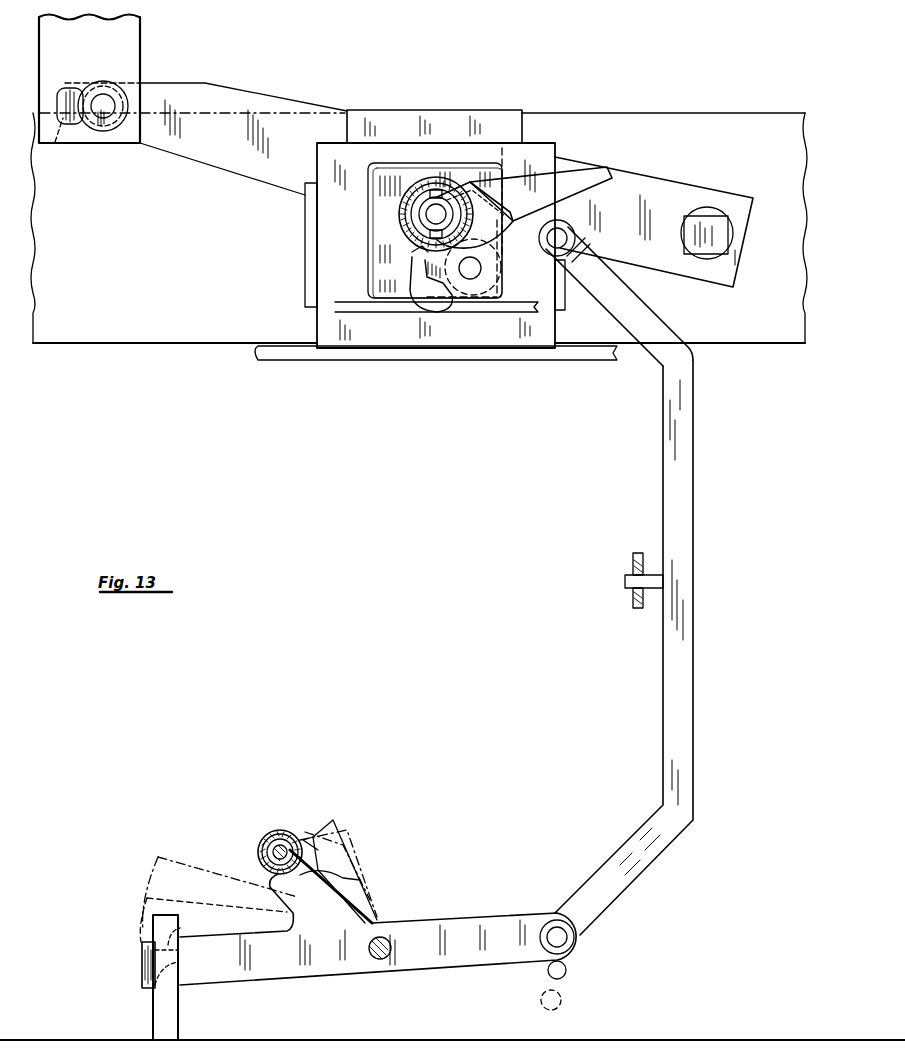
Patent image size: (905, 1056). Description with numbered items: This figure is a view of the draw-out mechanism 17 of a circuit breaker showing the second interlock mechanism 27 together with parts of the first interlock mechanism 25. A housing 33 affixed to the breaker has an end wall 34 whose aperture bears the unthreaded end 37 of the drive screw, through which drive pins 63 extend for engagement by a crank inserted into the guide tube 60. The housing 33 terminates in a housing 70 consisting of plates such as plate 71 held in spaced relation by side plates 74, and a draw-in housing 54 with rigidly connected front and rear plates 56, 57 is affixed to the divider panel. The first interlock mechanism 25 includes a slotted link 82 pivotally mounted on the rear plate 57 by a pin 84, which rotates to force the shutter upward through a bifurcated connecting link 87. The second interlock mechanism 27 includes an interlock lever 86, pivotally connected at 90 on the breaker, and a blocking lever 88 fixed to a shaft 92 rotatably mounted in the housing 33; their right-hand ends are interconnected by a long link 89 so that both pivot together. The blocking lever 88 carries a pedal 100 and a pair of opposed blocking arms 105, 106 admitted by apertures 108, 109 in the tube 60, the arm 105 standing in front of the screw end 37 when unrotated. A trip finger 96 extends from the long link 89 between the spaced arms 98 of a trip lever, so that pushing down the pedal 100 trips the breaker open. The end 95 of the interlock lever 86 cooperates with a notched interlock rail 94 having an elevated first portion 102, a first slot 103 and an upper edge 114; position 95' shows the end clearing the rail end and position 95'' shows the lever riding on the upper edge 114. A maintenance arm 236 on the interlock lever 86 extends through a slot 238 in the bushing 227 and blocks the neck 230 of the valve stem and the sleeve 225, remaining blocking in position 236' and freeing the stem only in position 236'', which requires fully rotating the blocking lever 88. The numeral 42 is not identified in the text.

The first interlock mechanism 25 is at (294, 52).
The bifurcated connecting link 87 is at (125, 46).
The slotted link 82 is at (232, 165).
The front plate 56 is at (360, 126).
The housing 70 is at (300, 259).
The plate 71 is at (330, 217).
The side plates 74 is at (312, 238).
The draw-out mechanism 17 is at (357, 289).
The end wall 34 is at (388, 180).
The slot 42 is at (502, 150).
The guide tube 60 is at (405, 197).
The unthreaded end 37 is at (434, 215).
The drive pins 63 is at (433, 190).
The housing 33 is at (451, 156).
The aperture 108 is at (446, 204).
The blocking arm 105 is at (472, 193).
The aperture 109 is at (416, 249).
The blocking arm 106 is at (418, 266).
The shaft 92 is at (476, 278).
The pedal 100 is at (581, 185).
The blocking lever 88 is at (536, 255).
The long link 89 is at (672, 497).
The rear plate 57 is at (660, 132).
The pin 84 is at (707, 248).
The draw-in housing 54 is at (497, 111).
The trip finger 96 is at (627, 581).
The arms 98 is at (633, 562).
The second interlock mechanism 27 is at (551, 719).
The interlock lever 86 is at (462, 945).
The pivot 90 is at (383, 960).
The sleeve 225 is at (279, 830).
The bushing 227 is at (268, 837).
The neck 230 is at (273, 852).
The slot 238 is at (298, 838).
The maintenance arm 236 is at (357, 871).
The maintenance arm position 236' is at (354, 865).
The maintenance arm position 236'' is at (353, 864).
The interlock rail 94 is at (168, 1020).
The end 95 is at (126, 965).
The interlock lever end position 95' is at (202, 893).
The interlock lever end position 95'' is at (191, 920).
The elevated first portion 102 is at (168, 940).
The upper edge 114 is at (180, 929).
The first slot 103 is at (178, 975).